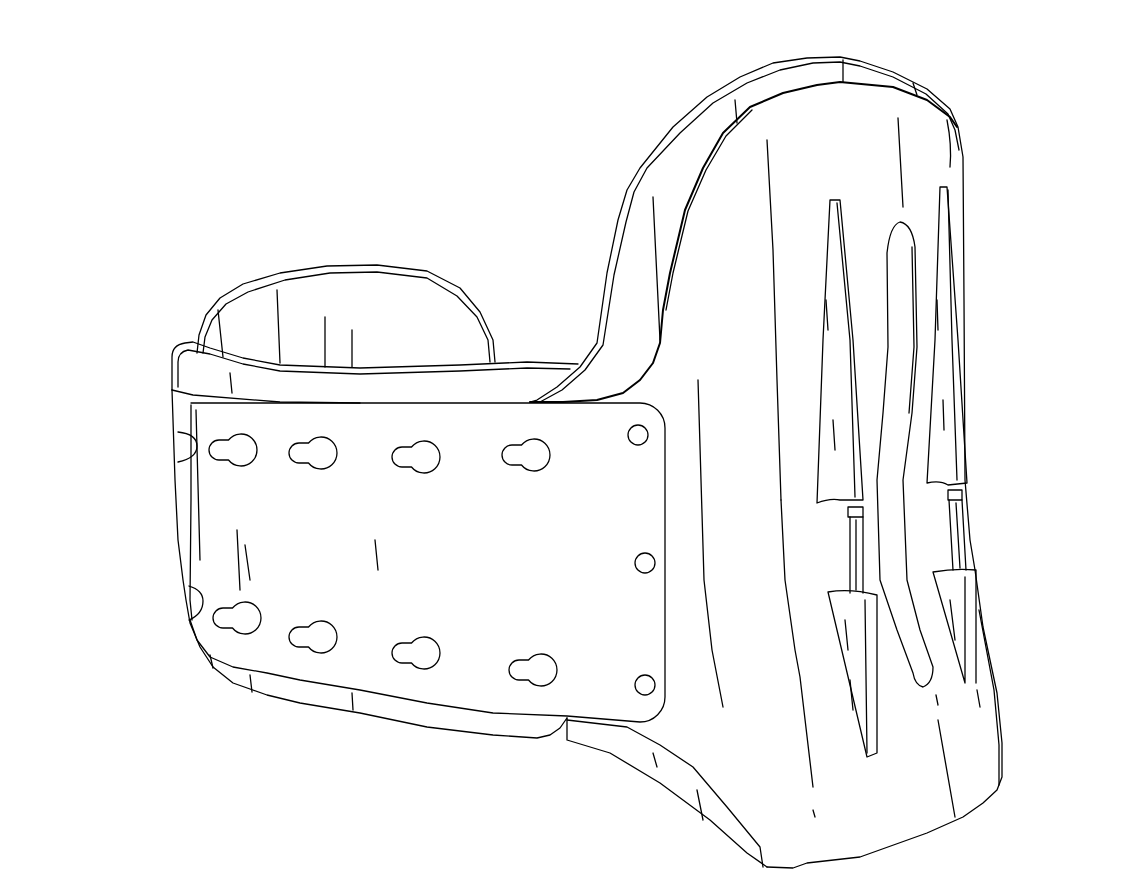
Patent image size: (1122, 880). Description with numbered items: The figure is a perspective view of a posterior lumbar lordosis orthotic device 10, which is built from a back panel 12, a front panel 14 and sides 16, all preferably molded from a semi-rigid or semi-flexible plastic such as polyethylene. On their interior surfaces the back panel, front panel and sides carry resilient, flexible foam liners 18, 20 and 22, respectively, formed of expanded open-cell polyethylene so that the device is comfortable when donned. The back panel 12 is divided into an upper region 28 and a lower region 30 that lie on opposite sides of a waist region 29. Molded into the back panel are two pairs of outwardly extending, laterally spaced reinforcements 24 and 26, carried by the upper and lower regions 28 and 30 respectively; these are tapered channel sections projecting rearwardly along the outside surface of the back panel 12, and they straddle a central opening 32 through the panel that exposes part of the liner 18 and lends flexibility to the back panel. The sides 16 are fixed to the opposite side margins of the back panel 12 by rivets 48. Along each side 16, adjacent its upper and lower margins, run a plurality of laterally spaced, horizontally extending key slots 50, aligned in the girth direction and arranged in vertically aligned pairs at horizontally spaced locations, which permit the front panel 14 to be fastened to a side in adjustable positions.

The posterior lumbar lordosis orthotic device 10 is at (1018, 522).
The back panel 12 is at (862, 115).
The front panel 14 is at (287, 305).
The sides 16 is at (470, 653).
The liner of back panel 18 is at (637, 210).
The liner of front panel 20 is at (383, 290).
The liner of sides 22 is at (517, 385).
The upper reinforcements 24 is at (945, 433).
The lower reinforcements 26 is at (957, 607).
The upper region 28 is at (762, 350).
The waist region 29 is at (720, 560).
The lower region 30 is at (769, 675).
The central opening 32 is at (897, 281).
The rivets 48 is at (657, 687).
The key slots 50 is at (423, 460).